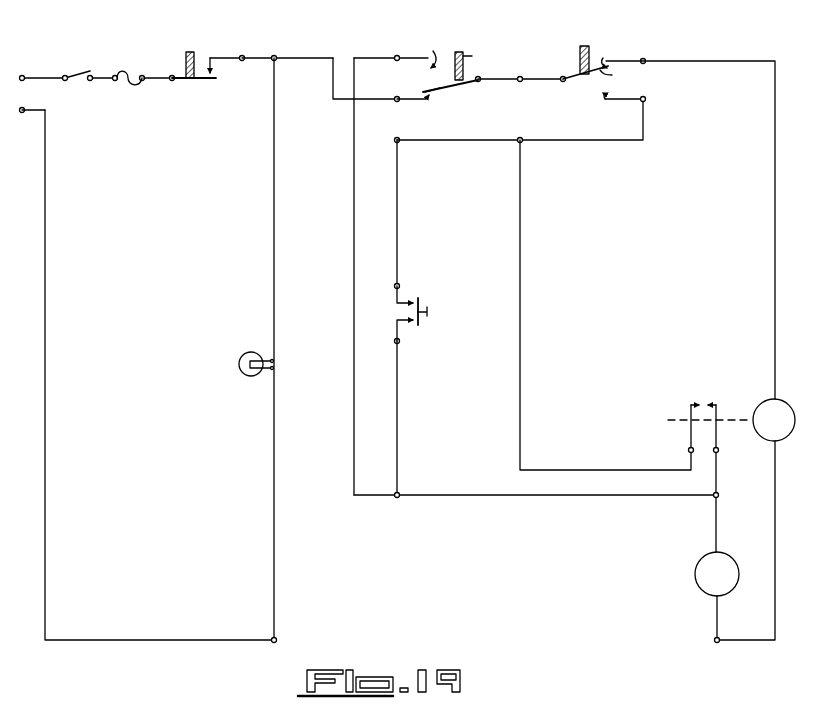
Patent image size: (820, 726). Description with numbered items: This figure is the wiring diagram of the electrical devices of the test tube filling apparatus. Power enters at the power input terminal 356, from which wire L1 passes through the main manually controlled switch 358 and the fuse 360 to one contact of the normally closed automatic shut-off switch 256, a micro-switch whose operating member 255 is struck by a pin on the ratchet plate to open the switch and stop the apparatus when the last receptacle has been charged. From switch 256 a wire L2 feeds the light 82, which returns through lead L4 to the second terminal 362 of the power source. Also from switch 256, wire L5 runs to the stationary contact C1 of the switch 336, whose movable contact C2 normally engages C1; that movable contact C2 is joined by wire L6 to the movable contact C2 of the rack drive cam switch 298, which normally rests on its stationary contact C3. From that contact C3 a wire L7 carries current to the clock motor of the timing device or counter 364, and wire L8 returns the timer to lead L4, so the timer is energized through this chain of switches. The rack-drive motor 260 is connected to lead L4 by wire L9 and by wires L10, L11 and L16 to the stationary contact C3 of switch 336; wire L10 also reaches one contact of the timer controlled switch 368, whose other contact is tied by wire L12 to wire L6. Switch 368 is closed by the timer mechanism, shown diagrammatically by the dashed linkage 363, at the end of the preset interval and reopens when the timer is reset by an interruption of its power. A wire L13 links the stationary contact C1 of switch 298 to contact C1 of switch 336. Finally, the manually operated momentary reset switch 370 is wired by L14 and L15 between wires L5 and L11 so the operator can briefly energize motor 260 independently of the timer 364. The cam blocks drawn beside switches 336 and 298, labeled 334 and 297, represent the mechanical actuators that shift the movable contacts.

The power input terminal 356 is at (29, 68).
The main manually controlled switch 358 is at (78, 83).
The fuse 360 is at (126, 74).
The operating member 255 is at (192, 56).
The normally closed automatic shut-off switch 256 is at (201, 83).
The terminal 362 is at (22, 114).
The switch 336 is at (452, 54).
The switch blade 334 is at (479, 53).
The switch cam 297 is at (580, 50).
The rack drive cam switch 298 is at (605, 50).
The manually operated momentary reset switch 370 is at (410, 296).
The light source 82 is at (241, 372).
The timer controlled switch 368 is at (698, 399).
The mechanical linkage 363 is at (676, 422).
The timing device or counter 364 is at (766, 400).
The rack-drive motor 260 is at (698, 592).
The stationary contact C1 is at (432, 97).
The movable contact C2 is at (437, 88).
The stationary contact C3 is at (415, 54).
The wire L1 is at (52, 76).
The wire L2 is at (274, 110).
The lead L4 is at (116, 640).
The wire L5 is at (305, 58).
The wire L6 is at (500, 79).
The wire L7 is at (775, 121).
The wire L8 is at (775, 530).
The wire L9 is at (717, 626).
The wire L10 is at (716, 530).
The wire L11 is at (520, 495).
The wire L12 is at (521, 438).
The wire L13 is at (456, 140).
The wire L14 is at (398, 401).
The wire L15 is at (398, 208).
The wire L16 is at (354, 239).